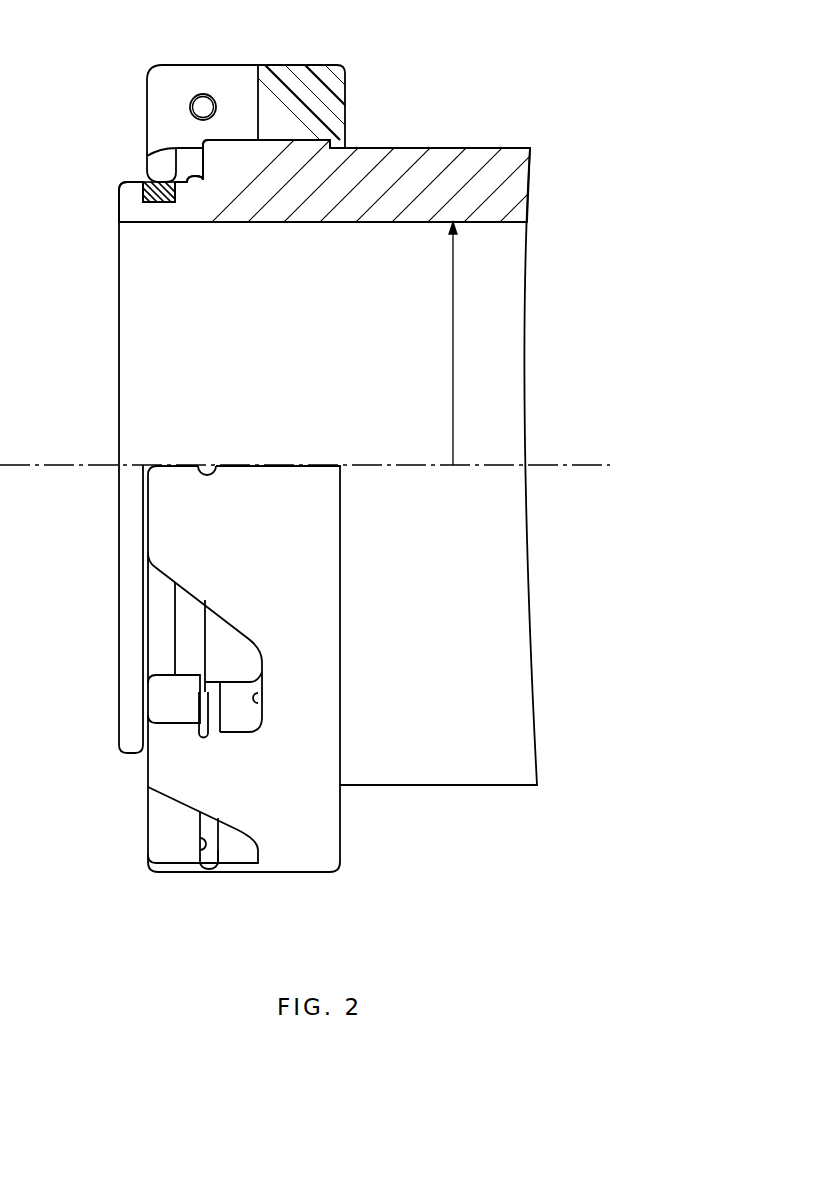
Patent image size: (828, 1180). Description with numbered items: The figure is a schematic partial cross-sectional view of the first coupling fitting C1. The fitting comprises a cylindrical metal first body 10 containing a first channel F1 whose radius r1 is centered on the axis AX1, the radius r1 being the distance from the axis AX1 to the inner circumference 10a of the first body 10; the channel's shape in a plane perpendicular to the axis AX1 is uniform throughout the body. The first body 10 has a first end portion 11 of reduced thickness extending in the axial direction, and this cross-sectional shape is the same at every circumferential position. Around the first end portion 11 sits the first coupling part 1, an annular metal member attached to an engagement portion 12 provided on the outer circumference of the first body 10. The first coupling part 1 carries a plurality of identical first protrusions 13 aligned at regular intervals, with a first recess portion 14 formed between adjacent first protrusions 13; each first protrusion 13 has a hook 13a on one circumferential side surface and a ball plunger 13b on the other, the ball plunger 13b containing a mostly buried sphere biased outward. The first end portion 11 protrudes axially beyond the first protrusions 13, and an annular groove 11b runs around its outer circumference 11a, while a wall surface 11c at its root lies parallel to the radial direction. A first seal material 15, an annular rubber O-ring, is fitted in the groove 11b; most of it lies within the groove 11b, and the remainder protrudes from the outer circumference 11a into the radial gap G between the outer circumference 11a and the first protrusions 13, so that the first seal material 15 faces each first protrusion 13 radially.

The first coupling part 1 is at (218, 890).
The first body 10 is at (413, 148).
The inner circumference 10a is at (378, 222).
The first end portion 11 is at (100, 210).
The outer circumference 11a is at (198, 185).
The groove 11b is at (148, 203).
The wall surface 11c is at (203, 147).
The engagement portion 12 is at (298, 168).
The first protrusion 13 is at (147, 95).
The hook 13a is at (207, 468).
The ball plunger 13b is at (197, 103).
The first recess portion 14 is at (258, 83).
The first seal material 15 is at (165, 203).
The gap G is at (182, 167).
The first coupling fitting C1 is at (474, 80).
The first channel F1 is at (505, 308).
The radius r1 is at (439, 343).
The axis AX1 is at (331, 465).